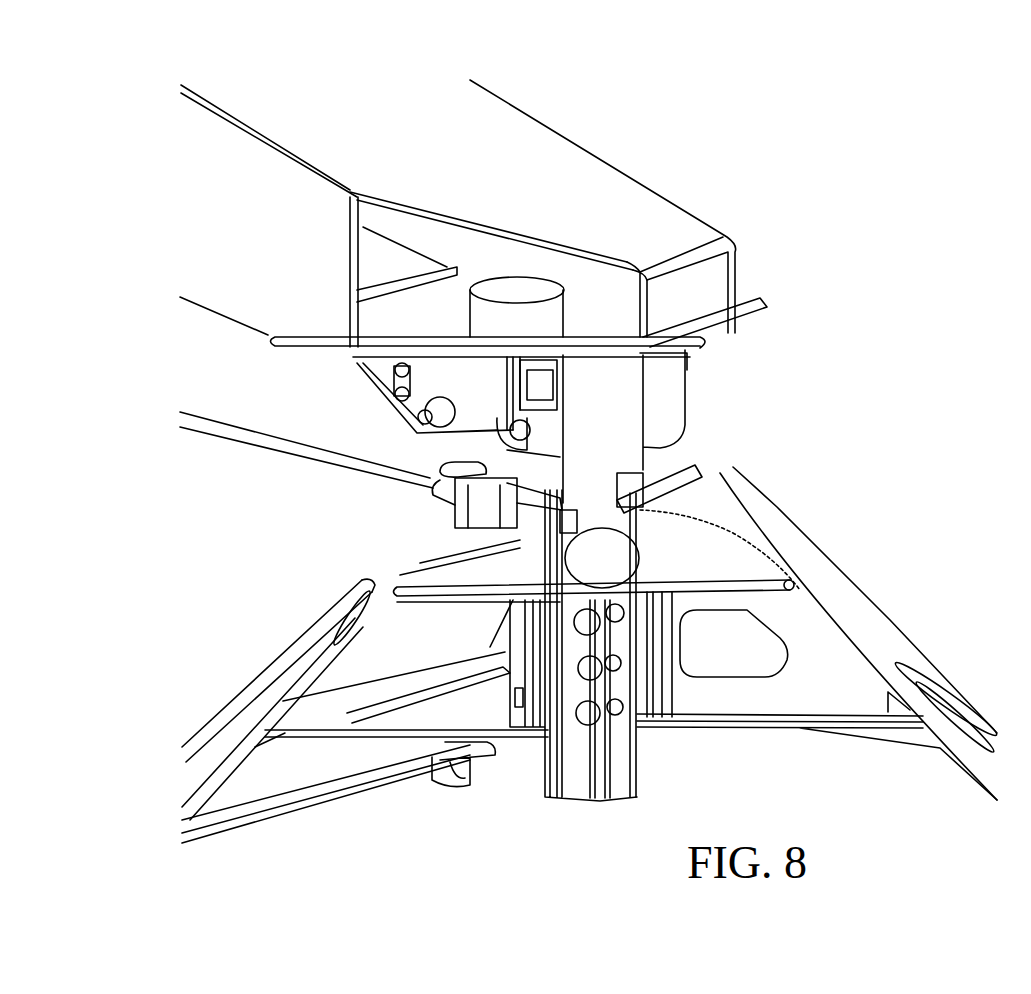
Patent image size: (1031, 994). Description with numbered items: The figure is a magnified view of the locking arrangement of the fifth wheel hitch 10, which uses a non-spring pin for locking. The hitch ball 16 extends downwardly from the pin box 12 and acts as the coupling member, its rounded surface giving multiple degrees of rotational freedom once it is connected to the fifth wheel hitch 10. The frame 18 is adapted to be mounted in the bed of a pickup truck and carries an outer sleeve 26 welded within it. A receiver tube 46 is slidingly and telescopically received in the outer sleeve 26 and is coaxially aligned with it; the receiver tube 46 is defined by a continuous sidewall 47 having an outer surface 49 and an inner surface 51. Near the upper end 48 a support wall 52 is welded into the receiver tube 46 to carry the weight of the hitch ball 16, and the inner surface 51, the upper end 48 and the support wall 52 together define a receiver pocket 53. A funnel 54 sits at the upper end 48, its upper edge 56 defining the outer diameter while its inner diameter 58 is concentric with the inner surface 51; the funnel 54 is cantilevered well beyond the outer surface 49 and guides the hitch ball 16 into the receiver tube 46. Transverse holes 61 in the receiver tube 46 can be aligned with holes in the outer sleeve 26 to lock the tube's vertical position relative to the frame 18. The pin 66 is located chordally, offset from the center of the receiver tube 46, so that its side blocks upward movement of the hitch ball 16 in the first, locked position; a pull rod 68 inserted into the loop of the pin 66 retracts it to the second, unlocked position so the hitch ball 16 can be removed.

The fifth wheel hitch 10 is at (932, 481).
The pin box 12 is at (563, 503).
The hitch ball 16 is at (640, 568).
The frame 18 is at (870, 627).
The outer sleeve 26 is at (545, 778).
The receiver tube 46 is at (605, 553).
The continuous sidewall 47 is at (637, 771).
The upper end 48 is at (580, 505).
The outer surface 49 is at (557, 573).
The inner surface 51 is at (577, 597).
The support wall 52 is at (577, 585).
The receiver pocket 53 is at (620, 510).
The funnel 54 is at (527, 470).
The upper edge 56 is at (640, 510).
The inner diameter 58 is at (572, 505).
The transverse holes 61 is at (618, 623).
The pin 66 is at (575, 513).
The pull rod 68 is at (228, 438).